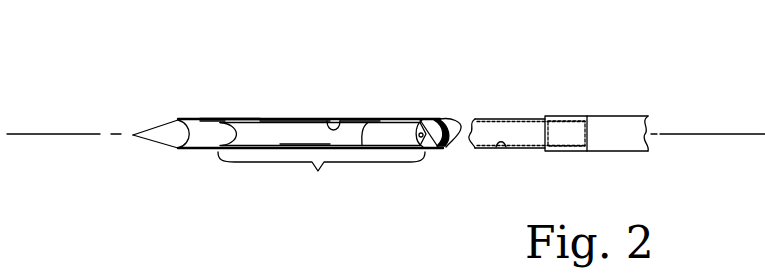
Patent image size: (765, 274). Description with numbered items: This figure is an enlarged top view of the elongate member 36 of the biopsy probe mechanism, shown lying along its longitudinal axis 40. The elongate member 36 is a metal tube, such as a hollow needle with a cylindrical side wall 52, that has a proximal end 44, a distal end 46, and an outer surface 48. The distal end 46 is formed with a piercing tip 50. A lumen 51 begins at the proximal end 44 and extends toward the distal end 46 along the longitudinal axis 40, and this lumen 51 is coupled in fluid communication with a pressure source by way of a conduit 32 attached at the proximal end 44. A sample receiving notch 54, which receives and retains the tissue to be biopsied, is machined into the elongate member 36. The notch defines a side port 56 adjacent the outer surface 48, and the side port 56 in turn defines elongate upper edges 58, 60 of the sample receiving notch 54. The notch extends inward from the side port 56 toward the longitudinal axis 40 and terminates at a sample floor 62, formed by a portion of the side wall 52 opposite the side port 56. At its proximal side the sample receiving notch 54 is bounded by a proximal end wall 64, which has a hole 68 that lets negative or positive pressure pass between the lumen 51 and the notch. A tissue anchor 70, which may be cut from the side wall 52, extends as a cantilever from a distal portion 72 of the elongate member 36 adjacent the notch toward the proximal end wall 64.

The conduit 32 is at (602, 116).
The elongate member 36 is at (150, 92).
The longitudinal axis 40 is at (33, 135).
The proximal end 44 is at (537, 103).
The distal end 46 is at (151, 150).
The outer surface 48 is at (197, 118).
The piercing tip 50 is at (133, 135).
The lumen 51 is at (458, 126).
The side wall 52 is at (334, 126).
The sample receiving notch 54 is at (318, 171).
The side port 56 is at (290, 118).
The elongate upper edge 58 is at (368, 123).
The elongate upper edge 60 is at (348, 120).
The sample floor 62 is at (297, 140).
The proximal end wall 64 is at (432, 118).
The hole 68 is at (445, 140).
The tissue anchor 70 is at (240, 133).
The distal portion 72 is at (207, 111).